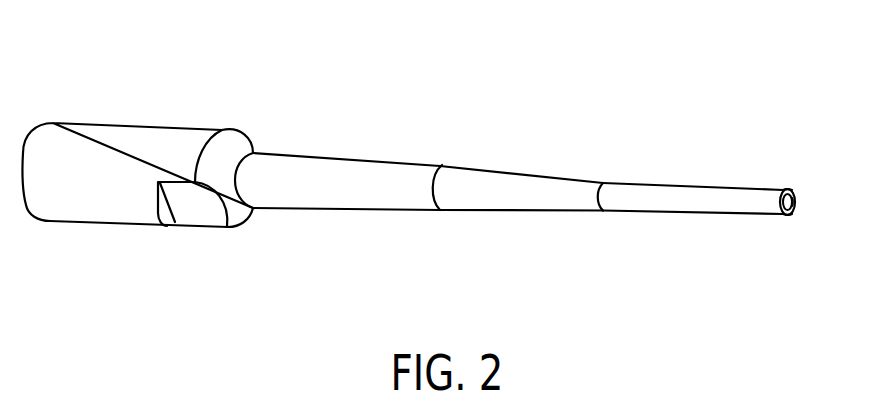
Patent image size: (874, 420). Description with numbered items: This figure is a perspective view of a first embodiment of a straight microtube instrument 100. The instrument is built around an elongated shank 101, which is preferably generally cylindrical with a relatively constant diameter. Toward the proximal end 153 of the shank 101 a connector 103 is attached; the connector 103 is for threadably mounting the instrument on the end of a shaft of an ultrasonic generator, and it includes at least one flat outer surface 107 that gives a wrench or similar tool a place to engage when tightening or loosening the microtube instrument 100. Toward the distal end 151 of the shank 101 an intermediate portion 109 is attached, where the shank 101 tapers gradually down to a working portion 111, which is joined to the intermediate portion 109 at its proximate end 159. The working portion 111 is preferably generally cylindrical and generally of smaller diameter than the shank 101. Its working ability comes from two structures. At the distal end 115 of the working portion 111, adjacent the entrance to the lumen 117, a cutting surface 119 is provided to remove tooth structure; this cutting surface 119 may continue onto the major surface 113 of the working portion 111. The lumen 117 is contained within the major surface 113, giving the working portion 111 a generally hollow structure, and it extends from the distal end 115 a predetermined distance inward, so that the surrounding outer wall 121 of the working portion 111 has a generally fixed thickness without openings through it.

The microtube instrument 100 is at (541, 85).
The elongated shank 101 is at (358, 210).
The connector 103 is at (82, 223).
The flat outer surface 107 is at (195, 218).
The intermediate portion 109 is at (525, 212).
The working portion 111 is at (680, 215).
The major surface 113 is at (743, 215).
The distal end 115 is at (784, 190).
The lumen 117 is at (796, 191).
The cutting surface 119 is at (797, 203).
The outer wall 121 is at (792, 217).
The distal end 151 is at (440, 212).
The proximal end 153 is at (250, 210).
The proximate end 159 is at (605, 212).